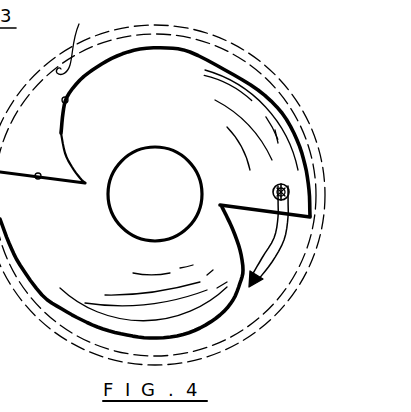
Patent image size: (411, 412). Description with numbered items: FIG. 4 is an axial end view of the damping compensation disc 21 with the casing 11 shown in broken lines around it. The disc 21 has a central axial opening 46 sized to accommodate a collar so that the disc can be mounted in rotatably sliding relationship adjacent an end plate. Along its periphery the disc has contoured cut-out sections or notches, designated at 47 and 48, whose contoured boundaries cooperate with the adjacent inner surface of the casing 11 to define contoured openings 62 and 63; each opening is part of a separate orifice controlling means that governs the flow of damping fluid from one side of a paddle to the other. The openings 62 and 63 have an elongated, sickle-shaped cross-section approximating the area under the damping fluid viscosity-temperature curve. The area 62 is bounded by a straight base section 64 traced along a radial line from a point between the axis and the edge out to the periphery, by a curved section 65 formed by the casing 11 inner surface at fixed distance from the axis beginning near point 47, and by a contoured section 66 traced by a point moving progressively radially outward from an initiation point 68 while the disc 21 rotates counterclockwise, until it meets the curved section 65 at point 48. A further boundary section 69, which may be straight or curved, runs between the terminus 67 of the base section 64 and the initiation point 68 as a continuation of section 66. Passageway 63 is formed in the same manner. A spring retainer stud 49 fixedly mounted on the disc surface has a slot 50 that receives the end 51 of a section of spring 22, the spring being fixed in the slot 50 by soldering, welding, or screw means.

The casing 11 is at (200, 27).
The damping compensation disc 21 is at (186, 125).
The spring 22 is at (272, 259).
The axial opening 46 is at (170, 205).
The contoured cut-out section 47 is at (1, 170).
The contoured cut-out section 48 is at (306, 221).
The spring retainer stud 49 is at (274, 190).
The slot 50 is at (277, 199).
The end of spring 51 is at (282, 185).
The contoured opening 62 is at (53, 128).
The contoured opening 63 is at (264, 240).
The base section 64 is at (40, 179).
The curved boundary section 65 is at (79, 44).
The contoured boundary section 66 is at (68, 101).
The terminus of base section 67 is at (86, 187).
The initiation point 68 is at (86, 180).
The boundary section 69 is at (83, 182).